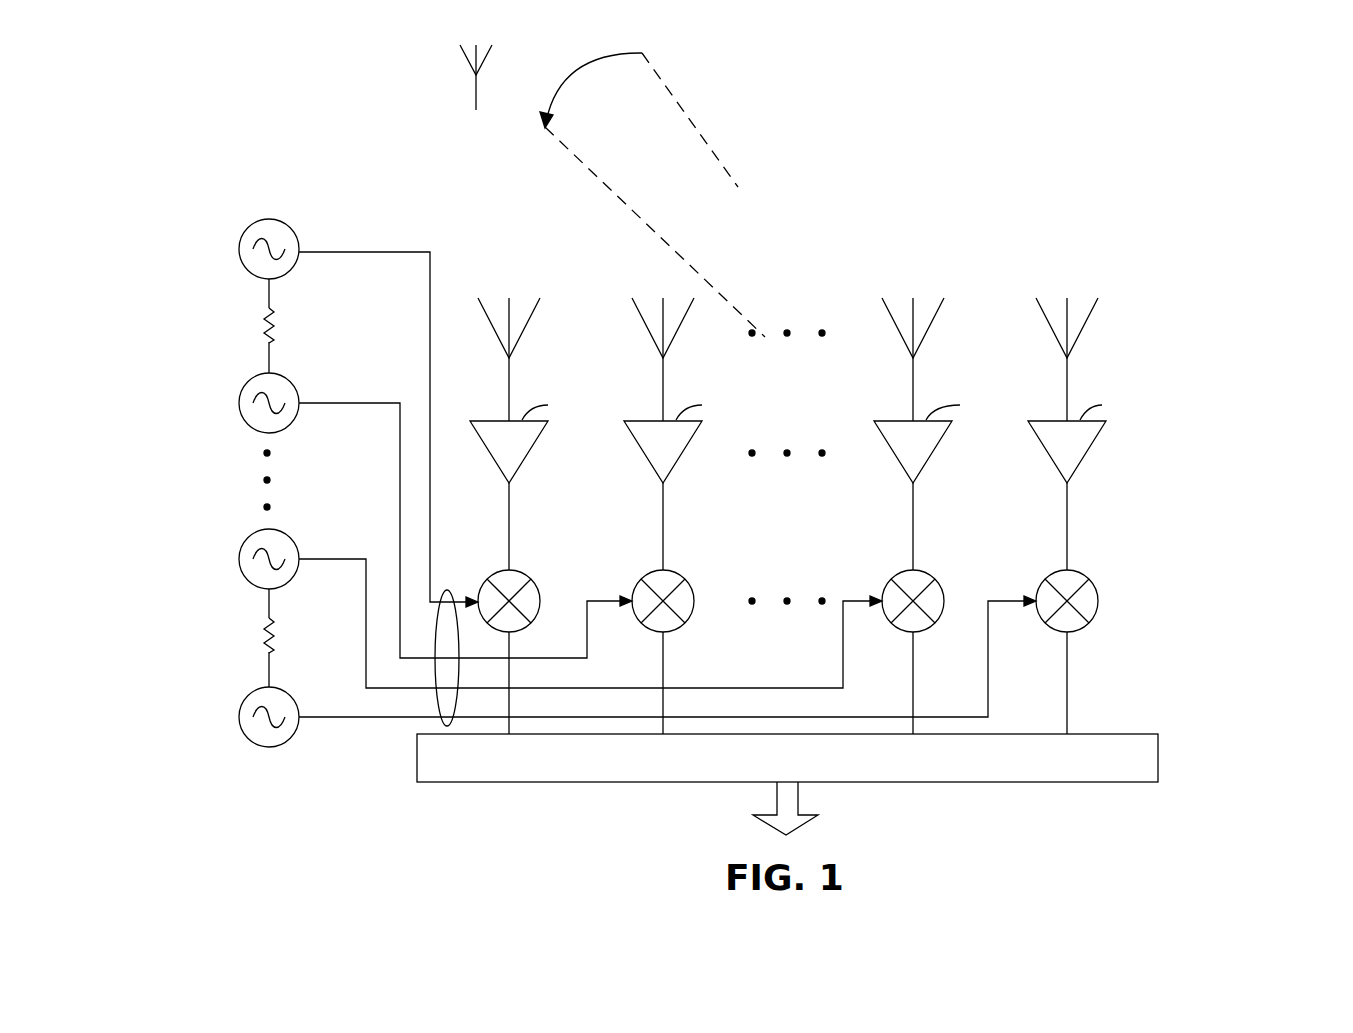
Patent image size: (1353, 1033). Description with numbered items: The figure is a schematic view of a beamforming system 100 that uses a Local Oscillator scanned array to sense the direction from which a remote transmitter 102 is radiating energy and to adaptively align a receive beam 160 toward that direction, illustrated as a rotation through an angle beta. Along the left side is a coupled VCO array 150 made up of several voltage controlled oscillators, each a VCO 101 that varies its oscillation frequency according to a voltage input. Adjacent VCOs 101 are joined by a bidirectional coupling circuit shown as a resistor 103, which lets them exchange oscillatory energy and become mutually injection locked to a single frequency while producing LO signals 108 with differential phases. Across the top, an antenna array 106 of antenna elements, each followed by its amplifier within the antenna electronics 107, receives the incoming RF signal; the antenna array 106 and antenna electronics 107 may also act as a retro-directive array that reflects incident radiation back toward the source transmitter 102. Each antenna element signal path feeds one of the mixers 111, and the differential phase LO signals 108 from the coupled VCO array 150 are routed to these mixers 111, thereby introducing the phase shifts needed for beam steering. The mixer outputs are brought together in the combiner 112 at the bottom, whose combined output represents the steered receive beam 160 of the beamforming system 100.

The beamforming system 100 is at (918, 180).
The voltage controlled oscillator 101 is at (250, 224).
The transmitter 102 is at (456, 49).
The resistor 103 is at (277, 322).
The antenna array 106 is at (533, 311).
The antenna electronics 107 is at (1153, 642).
The LO signals 108 is at (424, 700).
The mixers 111 is at (529, 579).
The combiner 112 is at (787, 784).
The coupled VCO array 150 is at (230, 483).
The receive beam 160 is at (670, 195).